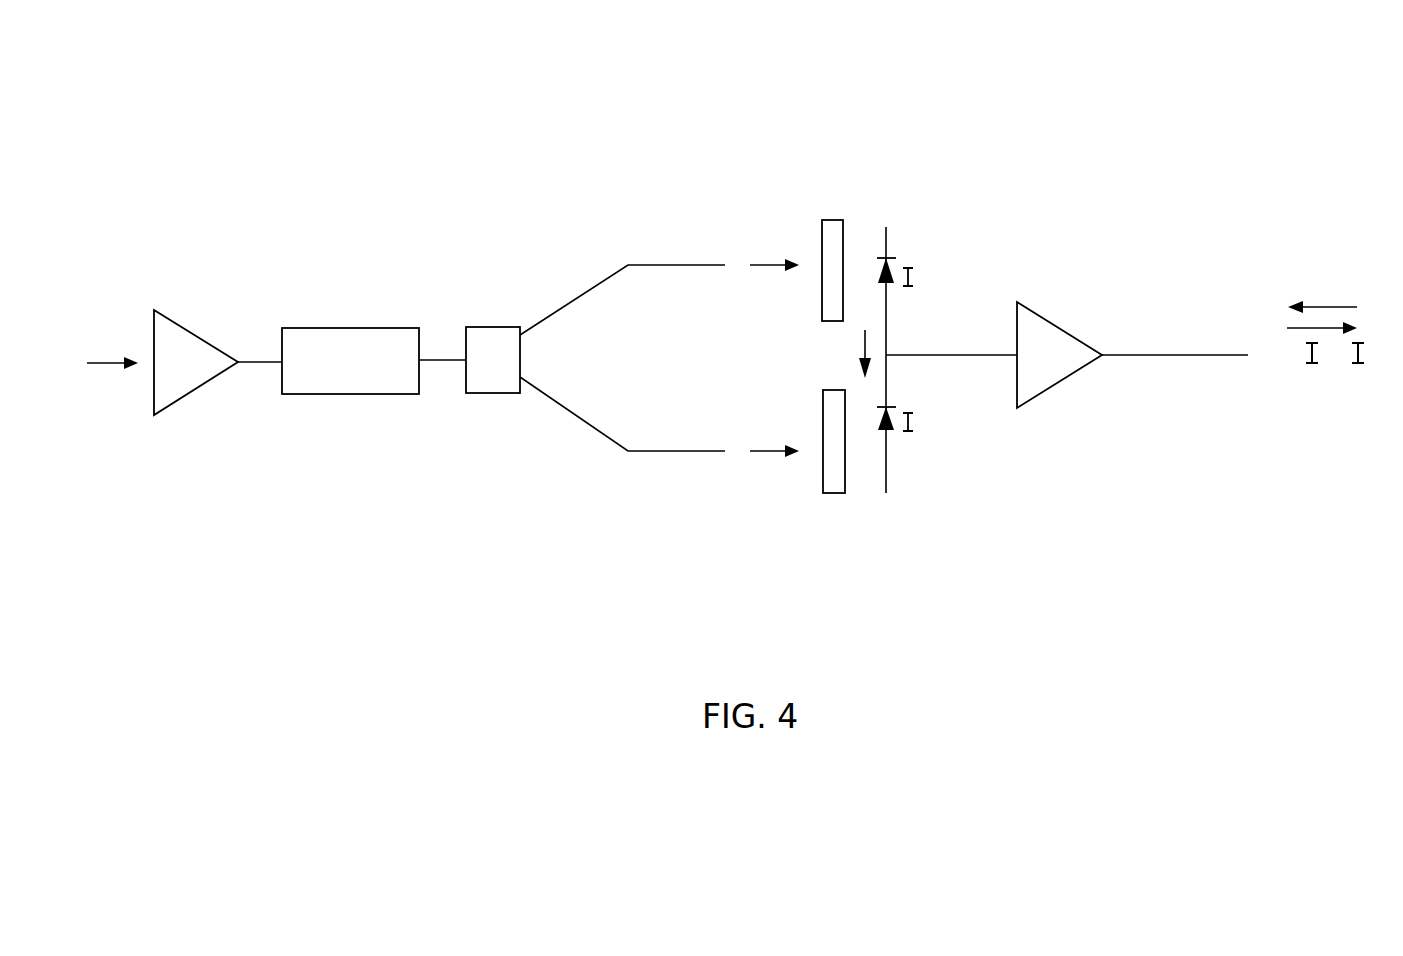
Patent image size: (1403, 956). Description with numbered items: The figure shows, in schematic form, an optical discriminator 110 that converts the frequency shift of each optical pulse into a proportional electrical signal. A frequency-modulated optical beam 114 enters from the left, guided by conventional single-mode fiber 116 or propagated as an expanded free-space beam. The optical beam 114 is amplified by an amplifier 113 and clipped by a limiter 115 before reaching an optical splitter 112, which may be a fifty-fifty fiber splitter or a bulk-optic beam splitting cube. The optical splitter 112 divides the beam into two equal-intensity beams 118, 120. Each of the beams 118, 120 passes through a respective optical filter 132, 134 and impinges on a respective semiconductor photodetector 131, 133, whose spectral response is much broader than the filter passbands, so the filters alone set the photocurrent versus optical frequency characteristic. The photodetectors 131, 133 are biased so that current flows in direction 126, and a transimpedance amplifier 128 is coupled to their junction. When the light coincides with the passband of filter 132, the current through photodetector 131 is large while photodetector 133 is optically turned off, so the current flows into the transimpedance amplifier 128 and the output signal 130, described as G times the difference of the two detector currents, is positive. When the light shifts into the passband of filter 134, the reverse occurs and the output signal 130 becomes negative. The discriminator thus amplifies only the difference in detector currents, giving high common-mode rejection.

The optical discriminator 110 is at (747, 111).
The optical splitter 112 is at (488, 327).
The amplifier 113 is at (198, 333).
The frequency-modulated optical beam 114 is at (102, 365).
The limiter 115 is at (340, 395).
The single-mode fiber 116 is at (248, 365).
The first beam 118 is at (772, 262).
The second beam 120 is at (770, 453).
The current flow direction 126 is at (865, 345).
The transimpedance amplifier 128 is at (1061, 326).
The output signal 130 is at (1324, 304).
The first semiconductor photodetector 131 is at (881, 258).
The first optical filter 132 is at (834, 220).
The second semiconductor photodetector 133 is at (882, 484).
The second optical filter 134 is at (833, 493).